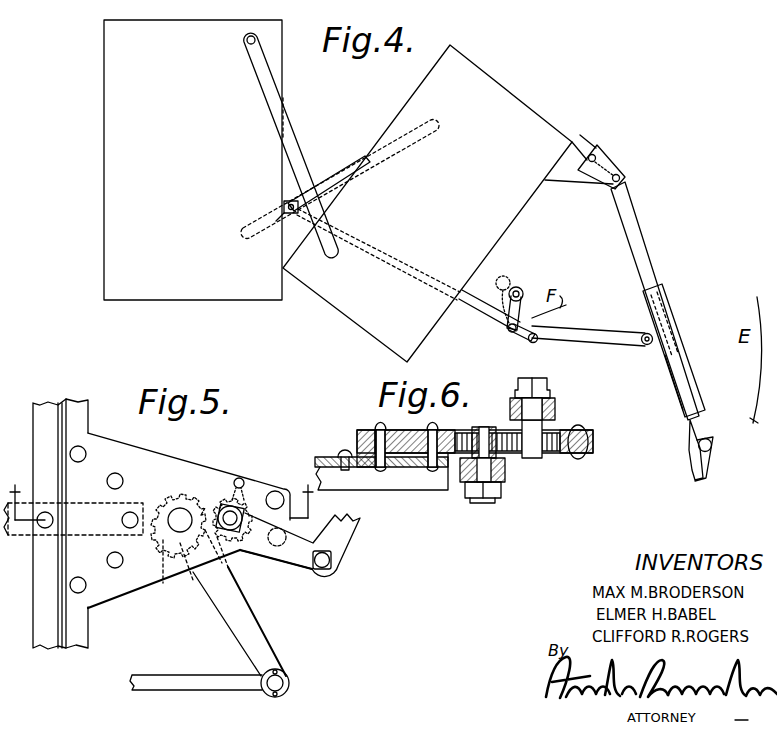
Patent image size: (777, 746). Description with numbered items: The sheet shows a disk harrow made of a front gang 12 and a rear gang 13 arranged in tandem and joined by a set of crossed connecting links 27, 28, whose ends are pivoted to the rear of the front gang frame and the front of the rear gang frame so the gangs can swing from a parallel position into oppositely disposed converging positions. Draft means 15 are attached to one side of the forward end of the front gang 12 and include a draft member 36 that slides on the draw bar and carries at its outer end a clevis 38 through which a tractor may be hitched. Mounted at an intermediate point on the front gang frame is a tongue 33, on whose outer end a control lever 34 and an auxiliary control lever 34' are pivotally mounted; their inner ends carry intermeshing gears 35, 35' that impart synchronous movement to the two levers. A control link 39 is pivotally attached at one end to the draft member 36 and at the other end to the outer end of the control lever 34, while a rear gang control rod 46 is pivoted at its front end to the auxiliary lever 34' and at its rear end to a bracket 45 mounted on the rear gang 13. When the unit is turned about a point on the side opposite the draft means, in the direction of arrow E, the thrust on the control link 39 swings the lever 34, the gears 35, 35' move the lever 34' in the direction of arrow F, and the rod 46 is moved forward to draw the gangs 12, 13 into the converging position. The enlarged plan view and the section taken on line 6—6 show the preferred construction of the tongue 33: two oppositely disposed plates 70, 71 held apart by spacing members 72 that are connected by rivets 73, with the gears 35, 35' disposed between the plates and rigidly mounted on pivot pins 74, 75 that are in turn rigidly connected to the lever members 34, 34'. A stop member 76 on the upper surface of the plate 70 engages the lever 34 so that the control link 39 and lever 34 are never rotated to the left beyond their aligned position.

In FIG. 5, the section line 6— 6 is at (161, 493).
In FIG. 4, the front gang 12 is at (527, 103).
In FIG. 5, the front gang 12 is at (78, 630).
In FIG. 4, the rear gang 13 is at (104, 200).
In FIG. 4, the draft means 15 is at (648, 212).
In FIG. 4, the connecting link 27 is at (287, 146).
In FIG. 4, the connecting link 28 is at (342, 174).
In FIG. 5, the tongue 33 is at (205, 445).
In FIG. 6, the tongue 33 is at (594, 458).
In FIG. 4, the control lever 34 is at (500, 319).
In FIG. 5, the control lever 34 is at (300, 552).
In FIG. 6, the control lever 34 is at (555, 418).
In FIG. 4, the auxiliary control lever 34' is at (541, 340).
In FIG. 5, the auxiliary control lever 34' is at (244, 632).
In FIG. 6, the auxiliary control lever 34' is at (503, 480).
In FIG. 5, the gear 35 is at (197, 515).
In FIG. 6, the gear 35 is at (517, 460).
In FIG. 5, the gear 35' is at (207, 552).
In FIG. 6, the gear 35' is at (489, 427).
In FIG. 4, the draft member 36 is at (692, 377).
In FIG. 4, the clevis 38 is at (694, 438).
In FIG. 4, the control link 39 is at (641, 222).
In FIG. 4, the bracket 45 is at (293, 215).
In FIG. 4, the rear gang control rod 46 is at (462, 303).
In FIG. 5, the rear gang control rod 46 is at (182, 686).
In FIG. 6, the plate 70 is at (392, 430).
In FIG. 6, the plate 71 is at (406, 468).
In FIG. 6, the spacing member 72 is at (366, 445).
In FIG. 5, the rivet 73 is at (275, 491).
In FIG. 6, the rivet 73 is at (380, 470).
In FIG. 6, the pivot pin 74 is at (382, 471).
In FIG. 6, the pivot pin 75 is at (555, 412).
In FIG. 4, the stop member 76 is at (522, 289).
In FIG. 5, the stop member 76 is at (244, 481).
In FIG. 6, the stop member 76 is at (436, 428).